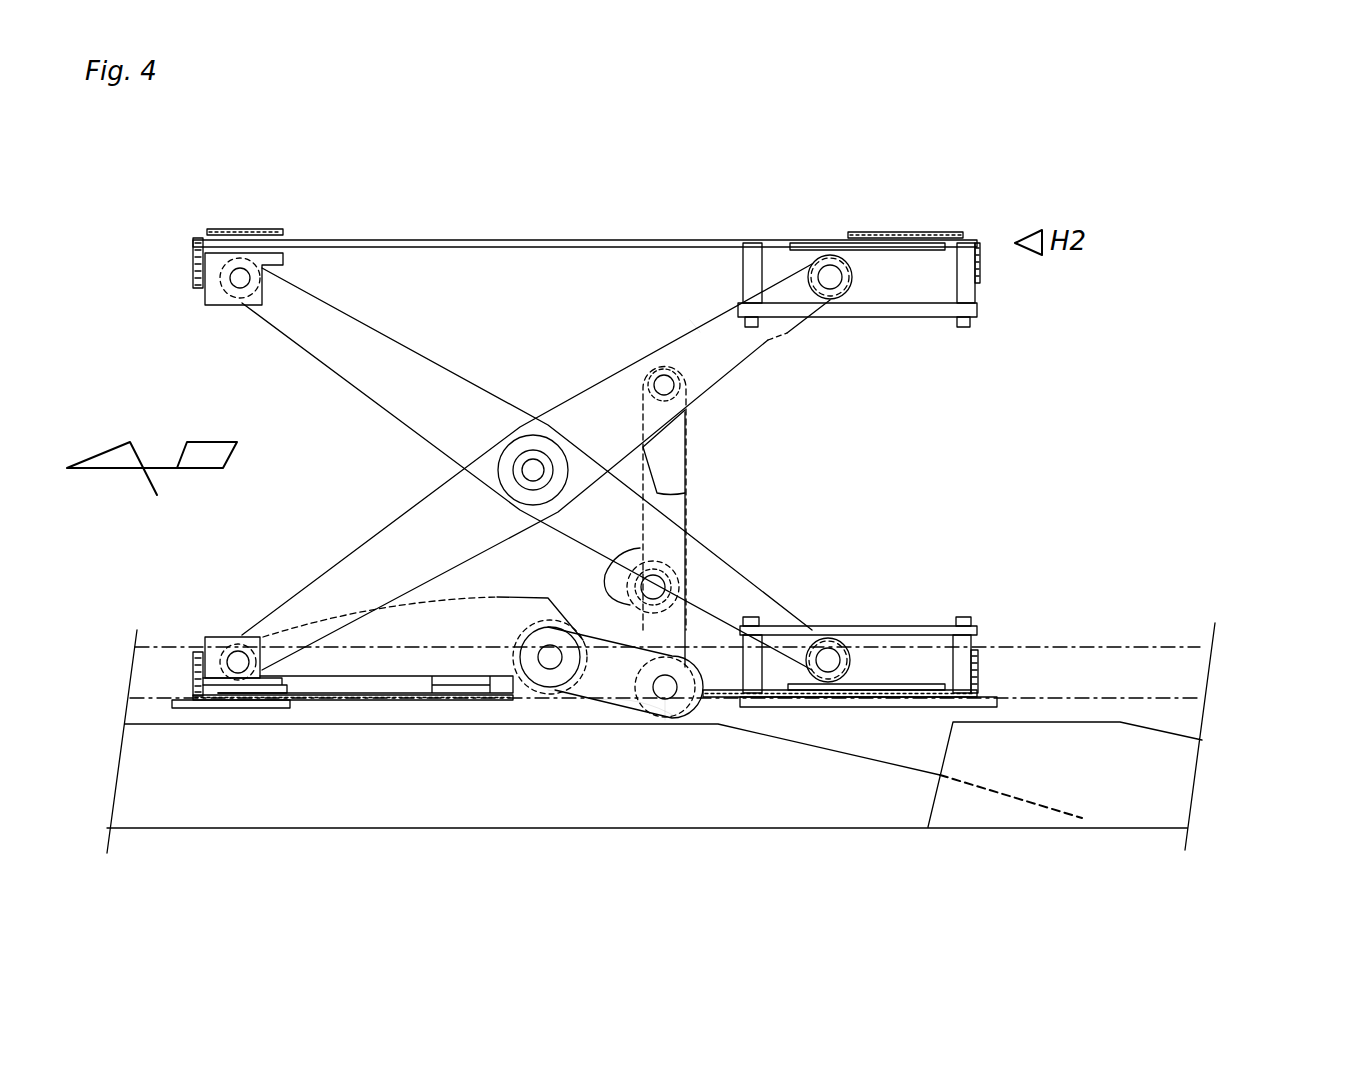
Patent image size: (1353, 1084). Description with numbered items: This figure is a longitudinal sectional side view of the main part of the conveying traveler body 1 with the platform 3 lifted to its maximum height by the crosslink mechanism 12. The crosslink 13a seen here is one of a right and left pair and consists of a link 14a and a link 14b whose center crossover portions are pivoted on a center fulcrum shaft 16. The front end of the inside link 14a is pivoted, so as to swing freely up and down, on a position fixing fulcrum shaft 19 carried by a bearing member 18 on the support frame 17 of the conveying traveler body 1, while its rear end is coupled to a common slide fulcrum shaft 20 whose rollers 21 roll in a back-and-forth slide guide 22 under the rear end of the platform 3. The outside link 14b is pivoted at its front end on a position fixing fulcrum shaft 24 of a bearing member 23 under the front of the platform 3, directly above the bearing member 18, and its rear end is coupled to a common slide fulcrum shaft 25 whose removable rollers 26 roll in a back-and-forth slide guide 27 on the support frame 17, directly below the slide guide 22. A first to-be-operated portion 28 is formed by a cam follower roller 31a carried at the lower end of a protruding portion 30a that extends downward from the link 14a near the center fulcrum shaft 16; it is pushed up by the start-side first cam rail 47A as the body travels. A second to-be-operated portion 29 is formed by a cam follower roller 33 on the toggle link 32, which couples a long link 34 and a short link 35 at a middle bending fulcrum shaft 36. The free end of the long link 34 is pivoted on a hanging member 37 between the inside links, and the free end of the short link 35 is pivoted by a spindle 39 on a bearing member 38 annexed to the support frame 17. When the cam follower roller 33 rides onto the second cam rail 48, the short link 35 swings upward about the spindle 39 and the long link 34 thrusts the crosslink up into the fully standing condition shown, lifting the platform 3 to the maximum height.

The conveying traveler body 1 is at (1108, 660).
The platform 3 is at (465, 240).
The crosslink mechanism 12 is at (350, 305).
The crosslink 13a is at (695, 320).
The link 14a is at (383, 553).
The link 14b is at (383, 360).
The center fulcrum shaft 16 is at (533, 470).
The support frame 17 is at (240, 708).
The bearing member 18 is at (215, 637).
The position fixing fulcrum shaft 19 is at (238, 660).
The common slide fulcrum shaft 20 is at (830, 277).
The roller 21 is at (857, 270).
The back-and-forth slide guide 22 is at (910, 317).
The bearing member 23 is at (210, 292).
The position fixing fulcrum shaft 24 is at (238, 285).
The common slide fulcrum shaft 25 is at (828, 660).
The roller 26 is at (880, 685).
The back-and-forth slide guide 27 is at (900, 657).
The first to-be-operated portion 28 is at (690, 615).
The second to-be-operated portion 29 is at (690, 720).
The protruding portion 30a is at (688, 493).
The cam follower roller 31a is at (640, 548).
The toggle link 32 is at (605, 705).
The cam follower roller 33 is at (700, 722).
The long link 34 is at (672, 447).
The short link 35 is at (595, 705).
The middle bending fulcrum shaft 36 is at (663, 720).
The hanging member 37 is at (664, 385).
The bearing member 38 is at (475, 623).
The spindle 39 is at (550, 657).
The start-side first cam rail 47A is at (1107, 758).
The second cam rail 48 is at (403, 780).